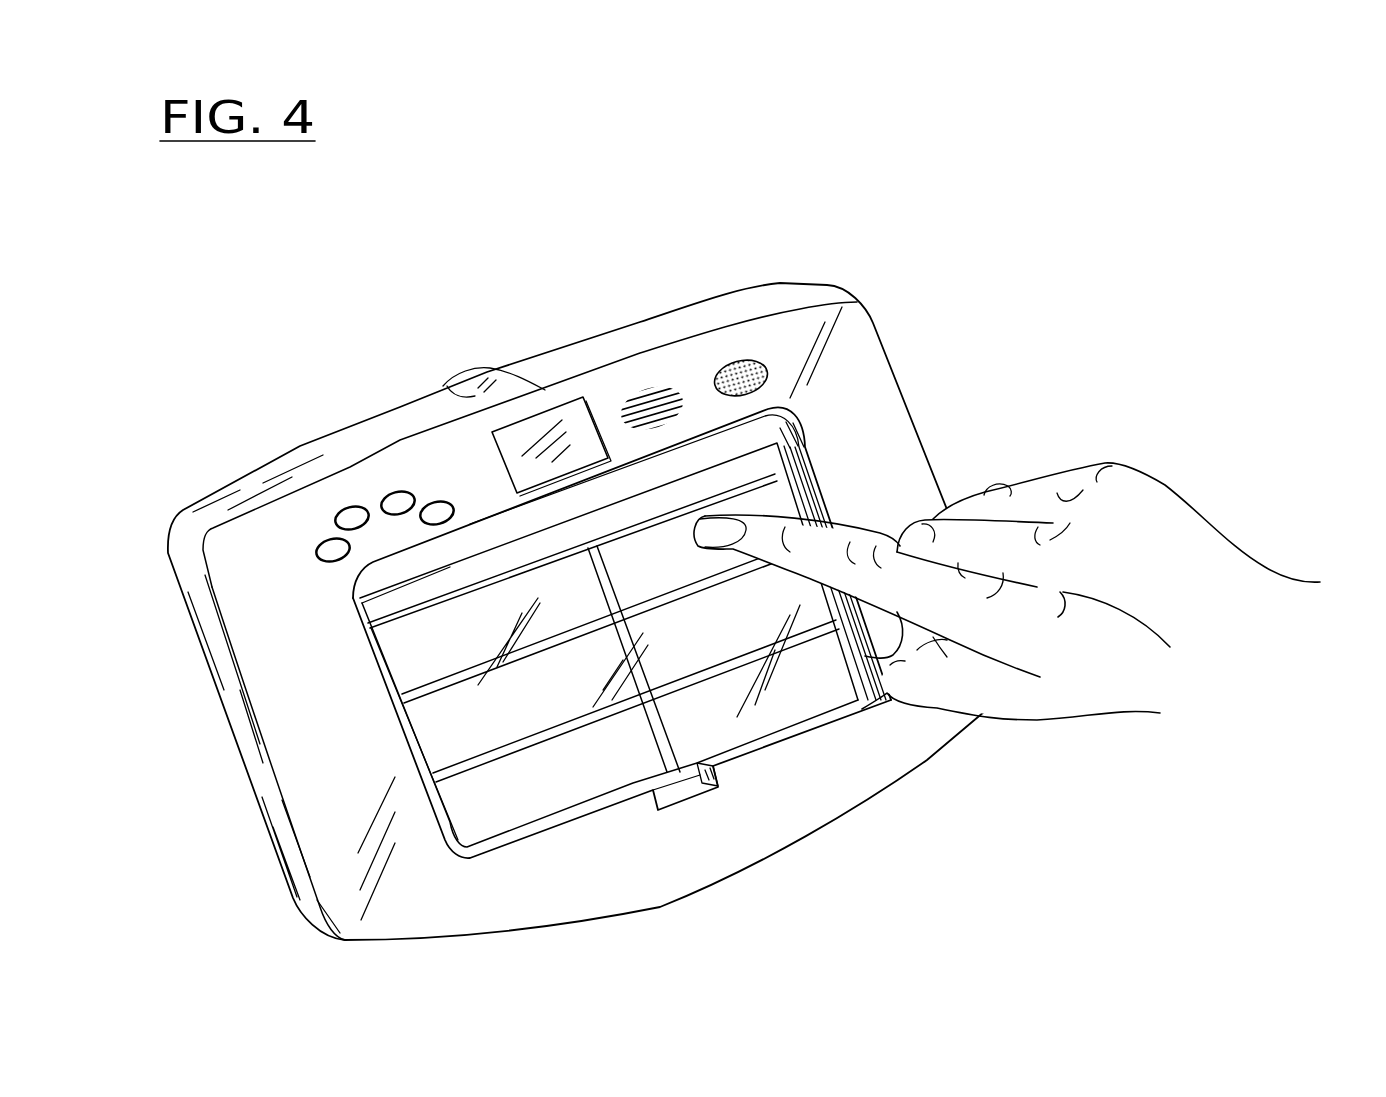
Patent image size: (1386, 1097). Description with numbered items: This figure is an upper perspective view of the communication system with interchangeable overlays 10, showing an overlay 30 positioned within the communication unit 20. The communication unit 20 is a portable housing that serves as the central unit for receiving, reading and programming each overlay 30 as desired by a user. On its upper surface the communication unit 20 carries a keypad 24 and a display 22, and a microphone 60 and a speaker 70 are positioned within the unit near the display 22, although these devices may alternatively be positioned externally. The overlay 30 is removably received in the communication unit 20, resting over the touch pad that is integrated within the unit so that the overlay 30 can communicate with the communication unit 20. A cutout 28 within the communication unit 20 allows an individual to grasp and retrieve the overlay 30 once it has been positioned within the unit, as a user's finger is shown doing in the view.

The communication system with interchangeable overlays 10 is at (698, 534).
The communication unit 20 is at (797, 297).
The display 22 is at (540, 425).
The keypad 24 is at (405, 497).
The cutout 28 is at (720, 788).
The overlay 30 is at (780, 458).
The microphone 60 is at (747, 368).
The speaker 70 is at (657, 402).